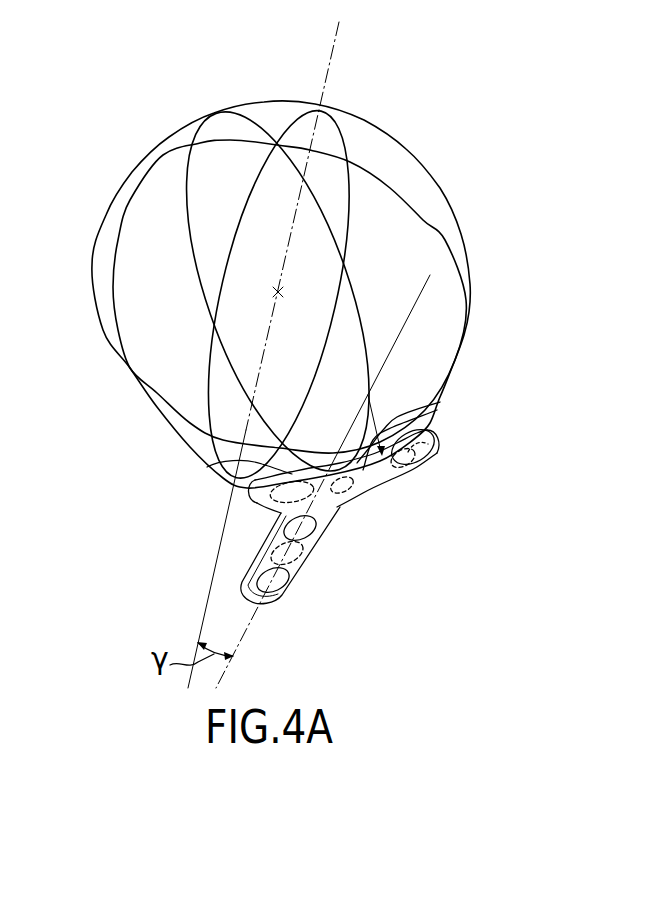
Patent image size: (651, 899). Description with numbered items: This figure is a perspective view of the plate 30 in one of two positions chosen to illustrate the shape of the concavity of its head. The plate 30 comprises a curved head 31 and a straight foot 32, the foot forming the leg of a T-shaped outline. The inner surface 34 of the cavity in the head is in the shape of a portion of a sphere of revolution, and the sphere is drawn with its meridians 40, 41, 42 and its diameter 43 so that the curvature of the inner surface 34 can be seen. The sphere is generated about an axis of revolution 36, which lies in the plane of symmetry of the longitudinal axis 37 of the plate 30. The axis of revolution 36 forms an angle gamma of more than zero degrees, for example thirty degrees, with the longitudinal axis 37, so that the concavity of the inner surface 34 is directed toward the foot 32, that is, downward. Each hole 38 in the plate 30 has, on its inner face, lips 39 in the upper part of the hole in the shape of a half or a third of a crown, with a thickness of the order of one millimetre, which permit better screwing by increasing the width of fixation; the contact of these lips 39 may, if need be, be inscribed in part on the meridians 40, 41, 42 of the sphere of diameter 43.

The plate 30 is at (331, 523).
The curved head 31 is at (387, 477).
The straight foot 32 is at (303, 570).
The inner surface 34 is at (440, 402).
The axis of revolution 36 is at (332, 77).
The longitudinal axis 37 is at (413, 310).
The hole 38 is at (427, 457).
The lips 39 is at (340, 463).
The meridian 40 is at (408, 147).
The meridian 41 is at (348, 142).
The meridian 42 is at (259, 125).
The diameter 43 is at (96, 236).